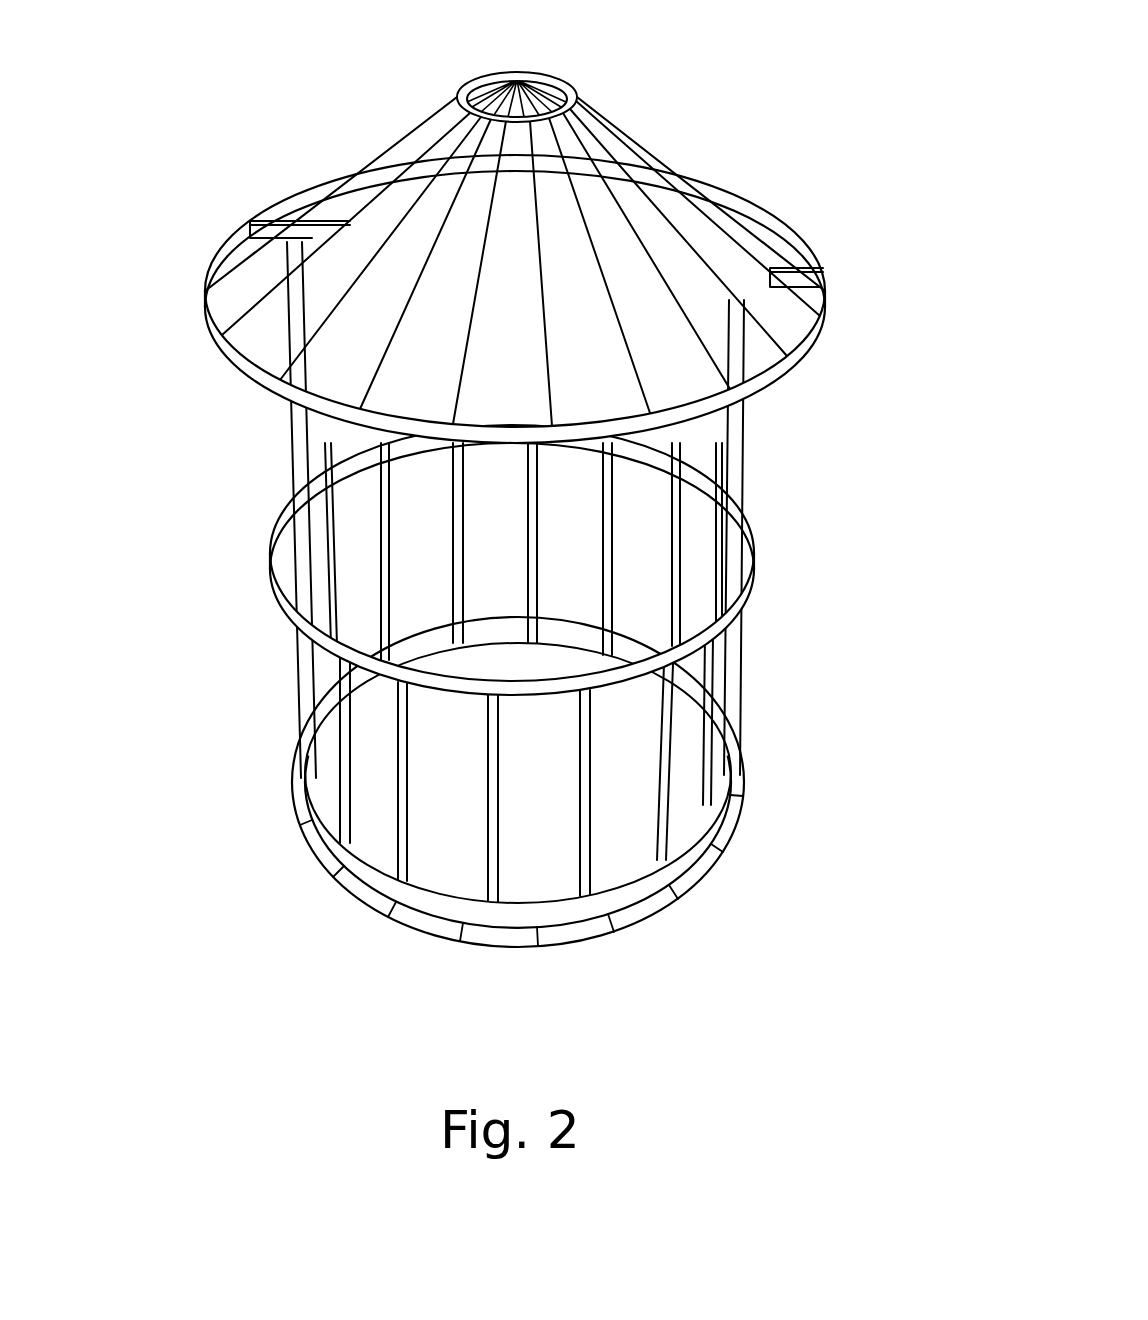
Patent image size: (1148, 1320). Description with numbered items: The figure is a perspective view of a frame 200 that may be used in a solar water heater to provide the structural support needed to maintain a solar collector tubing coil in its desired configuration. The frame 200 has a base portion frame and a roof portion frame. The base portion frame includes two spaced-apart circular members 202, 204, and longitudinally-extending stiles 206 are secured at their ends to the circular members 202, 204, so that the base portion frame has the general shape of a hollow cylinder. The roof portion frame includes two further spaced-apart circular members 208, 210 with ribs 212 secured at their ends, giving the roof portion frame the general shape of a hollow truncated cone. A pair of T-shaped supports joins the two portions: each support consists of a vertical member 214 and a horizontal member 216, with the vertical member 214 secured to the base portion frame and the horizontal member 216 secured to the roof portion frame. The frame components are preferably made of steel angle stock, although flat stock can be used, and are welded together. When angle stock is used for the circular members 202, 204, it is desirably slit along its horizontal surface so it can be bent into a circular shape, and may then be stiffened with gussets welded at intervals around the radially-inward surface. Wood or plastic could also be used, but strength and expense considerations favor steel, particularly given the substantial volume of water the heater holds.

The frame 200 is at (524, 508).
The circular member 202 is at (738, 545).
The circular member 204 is at (677, 866).
The stile 206 is at (573, 838).
The circular member 208 is at (203, 322).
The circular member 210 is at (516, 78).
The rib 212 is at (620, 203).
The vertical member 214 is at (293, 447).
The horizontal member 216 is at (310, 255).